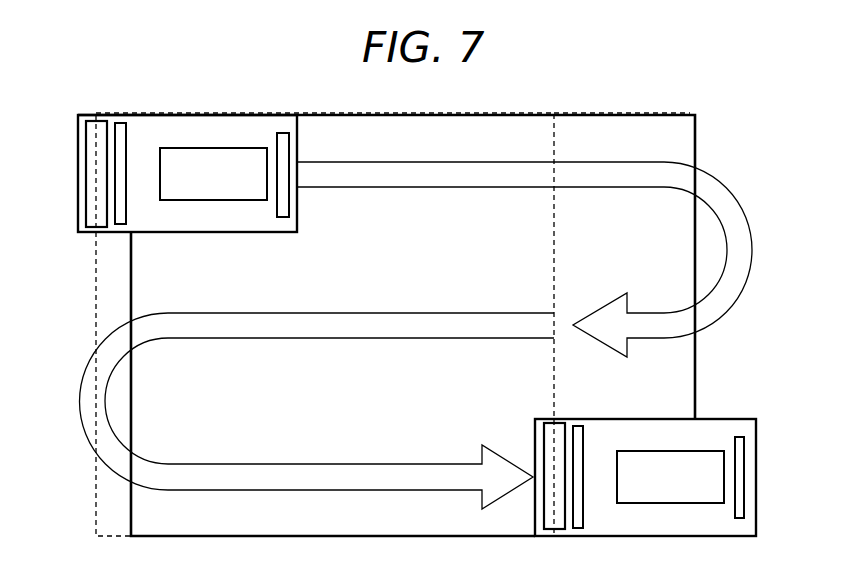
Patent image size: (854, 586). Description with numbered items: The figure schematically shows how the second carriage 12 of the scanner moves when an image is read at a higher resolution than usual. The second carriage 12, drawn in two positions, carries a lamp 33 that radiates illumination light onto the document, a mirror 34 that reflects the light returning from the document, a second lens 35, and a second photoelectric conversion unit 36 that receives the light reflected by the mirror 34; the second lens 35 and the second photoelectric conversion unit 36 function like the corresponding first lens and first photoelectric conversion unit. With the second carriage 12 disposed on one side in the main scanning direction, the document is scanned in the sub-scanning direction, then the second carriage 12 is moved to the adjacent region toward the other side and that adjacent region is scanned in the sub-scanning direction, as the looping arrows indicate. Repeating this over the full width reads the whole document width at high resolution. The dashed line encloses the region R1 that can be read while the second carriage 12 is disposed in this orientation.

The second carriage 12 is at (78, 115).
The lamp 33 is at (120, 224).
The mirror 34 is at (86, 172).
The second lens 35 is at (213, 200).
The second photoelectric conversion unit 36 is at (283, 217).
The region R1 is at (96, 302).